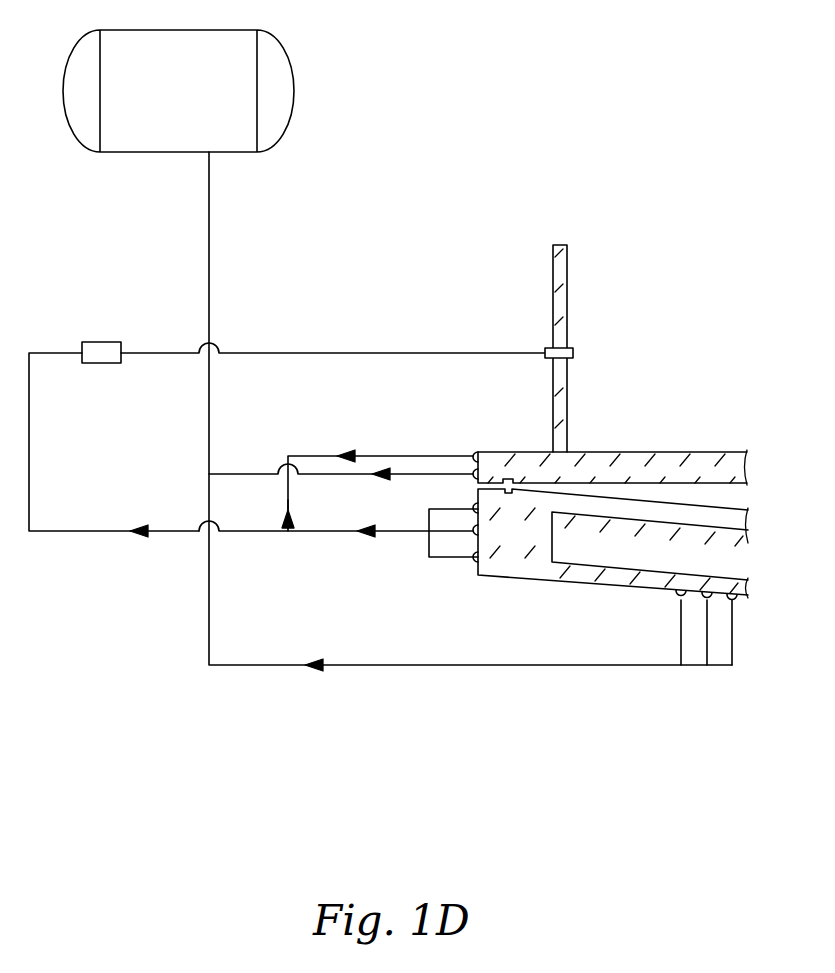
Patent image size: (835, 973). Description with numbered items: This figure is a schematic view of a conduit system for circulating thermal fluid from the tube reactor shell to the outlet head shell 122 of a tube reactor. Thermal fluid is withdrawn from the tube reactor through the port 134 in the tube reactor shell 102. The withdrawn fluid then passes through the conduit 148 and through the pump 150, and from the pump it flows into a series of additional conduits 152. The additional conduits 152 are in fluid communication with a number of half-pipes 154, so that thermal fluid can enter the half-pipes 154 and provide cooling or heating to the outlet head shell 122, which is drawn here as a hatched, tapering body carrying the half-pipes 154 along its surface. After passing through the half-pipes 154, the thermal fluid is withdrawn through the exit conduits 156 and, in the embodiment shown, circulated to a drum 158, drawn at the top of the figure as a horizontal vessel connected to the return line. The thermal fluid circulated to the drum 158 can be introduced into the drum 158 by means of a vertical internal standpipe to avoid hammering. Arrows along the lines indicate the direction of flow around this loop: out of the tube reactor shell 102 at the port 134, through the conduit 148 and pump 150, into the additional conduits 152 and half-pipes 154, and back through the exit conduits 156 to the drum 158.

The drum 158 is at (178, 91).
The exit conduits 156 is at (211, 252).
The pump 150 is at (84, 338).
The conduit 148 is at (384, 351).
The additional conduits 152 is at (380, 455).
The half-pipes 154 is at (473, 460).
The tube reactor shell 102 is at (569, 294).
The port 134 is at (575, 353).
The outlet head shell 122 is at (726, 572).